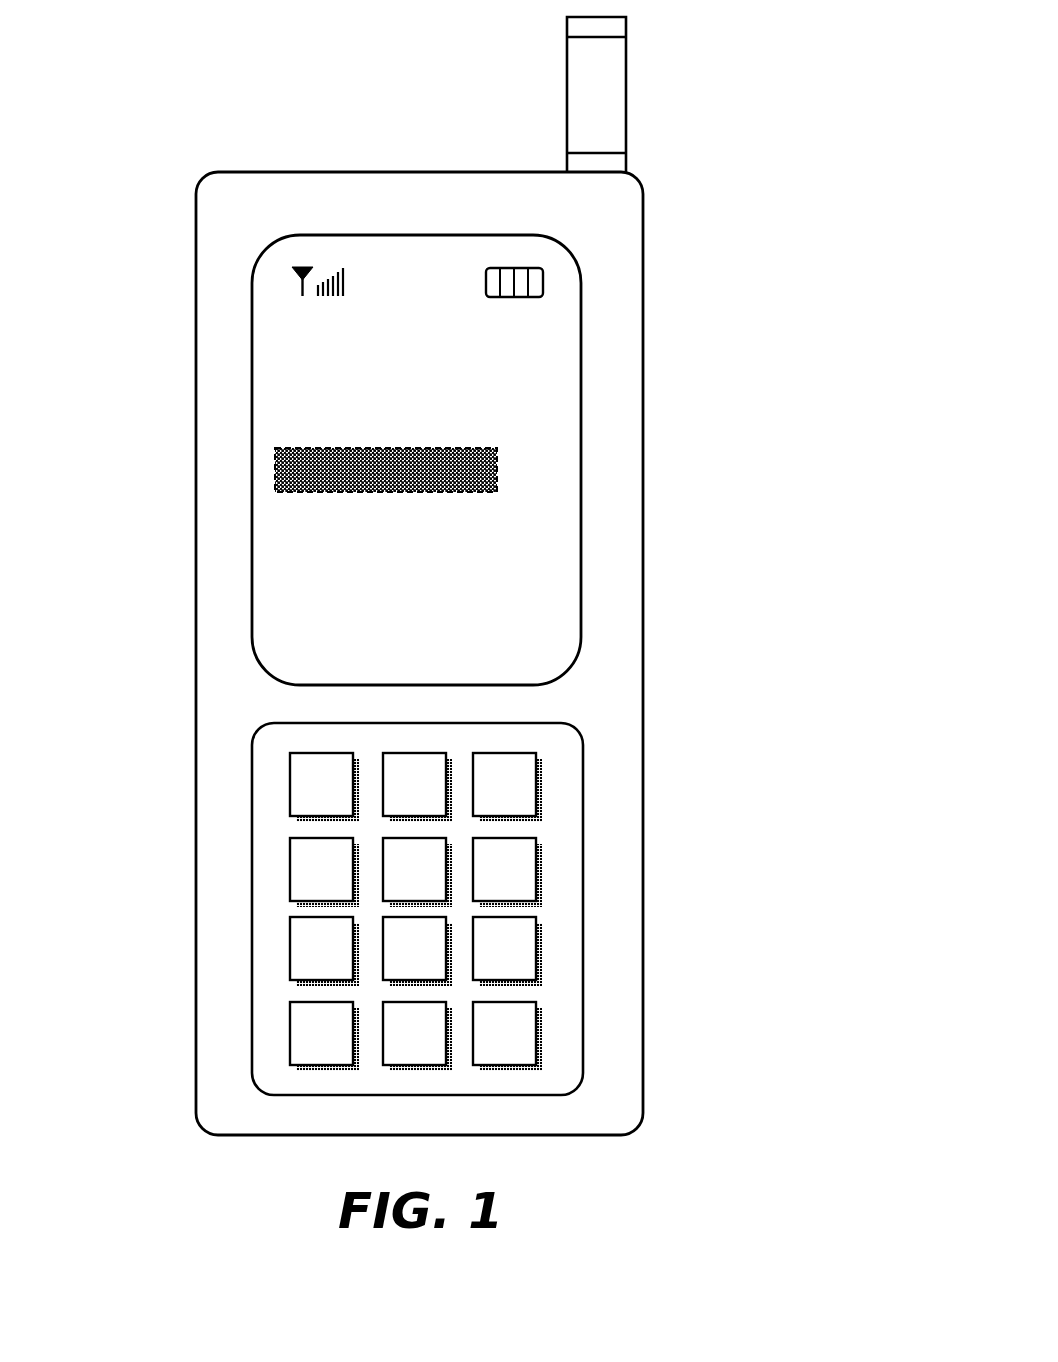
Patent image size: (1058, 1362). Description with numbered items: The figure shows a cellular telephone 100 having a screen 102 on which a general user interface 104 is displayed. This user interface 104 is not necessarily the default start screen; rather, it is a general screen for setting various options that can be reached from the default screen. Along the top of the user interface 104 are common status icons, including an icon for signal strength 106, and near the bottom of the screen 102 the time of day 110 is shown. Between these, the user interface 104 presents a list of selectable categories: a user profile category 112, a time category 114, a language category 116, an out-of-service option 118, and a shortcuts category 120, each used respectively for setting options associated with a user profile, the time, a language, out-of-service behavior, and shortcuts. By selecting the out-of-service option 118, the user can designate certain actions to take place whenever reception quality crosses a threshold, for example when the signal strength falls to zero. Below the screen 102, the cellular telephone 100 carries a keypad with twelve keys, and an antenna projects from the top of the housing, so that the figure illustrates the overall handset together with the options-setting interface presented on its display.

The cellular telephone 100 is at (742, 95).
The screen 102 is at (257, 547).
The user interface 104 is at (280, 328).
The signal strength icon 106 is at (308, 248).
The time of day icon 110 is at (257, 622).
The user profile category 112 is at (375, 403).
The time category 114 is at (358, 437).
The language category 116 is at (410, 468).
The out-of-service option 118 is at (465, 518).
The shortcuts category 120 is at (407, 553).